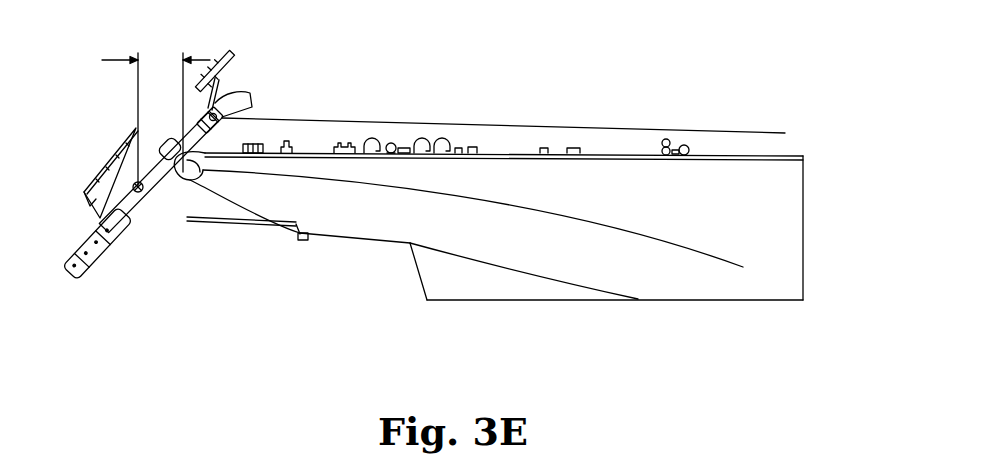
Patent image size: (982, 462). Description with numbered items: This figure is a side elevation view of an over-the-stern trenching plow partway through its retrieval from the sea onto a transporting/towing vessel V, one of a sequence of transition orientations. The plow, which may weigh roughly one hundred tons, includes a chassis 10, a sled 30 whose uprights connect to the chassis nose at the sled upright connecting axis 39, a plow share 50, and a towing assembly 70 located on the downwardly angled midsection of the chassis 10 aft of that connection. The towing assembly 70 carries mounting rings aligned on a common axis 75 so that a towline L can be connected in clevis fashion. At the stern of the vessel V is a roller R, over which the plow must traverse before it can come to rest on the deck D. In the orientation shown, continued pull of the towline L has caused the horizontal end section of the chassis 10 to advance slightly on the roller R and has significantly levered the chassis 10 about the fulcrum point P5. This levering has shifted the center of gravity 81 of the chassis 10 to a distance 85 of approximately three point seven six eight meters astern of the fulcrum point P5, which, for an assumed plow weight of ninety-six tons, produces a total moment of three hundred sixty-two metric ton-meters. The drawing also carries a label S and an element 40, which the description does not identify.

The chassis 10 is at (222, 272).
The sled 30 is at (199, 43).
The sled upright connecting axis 39 is at (235, 88).
The blade 40 is at (103, 155).
The plow share 50 is at (120, 282).
The towing assembly 70 is at (229, 147).
The common axis 75 is at (218, 107).
The center of gravity 81 is at (140, 195).
The distance of 3.768 meters 85 is at (124, 60).
The fulcrum point P5 is at (158, 155).
The stern roller R is at (185, 180).
The strut S is at (203, 212).
The towline L is at (736, 133).
The deck D is at (797, 157).
The vessel V is at (732, 302).